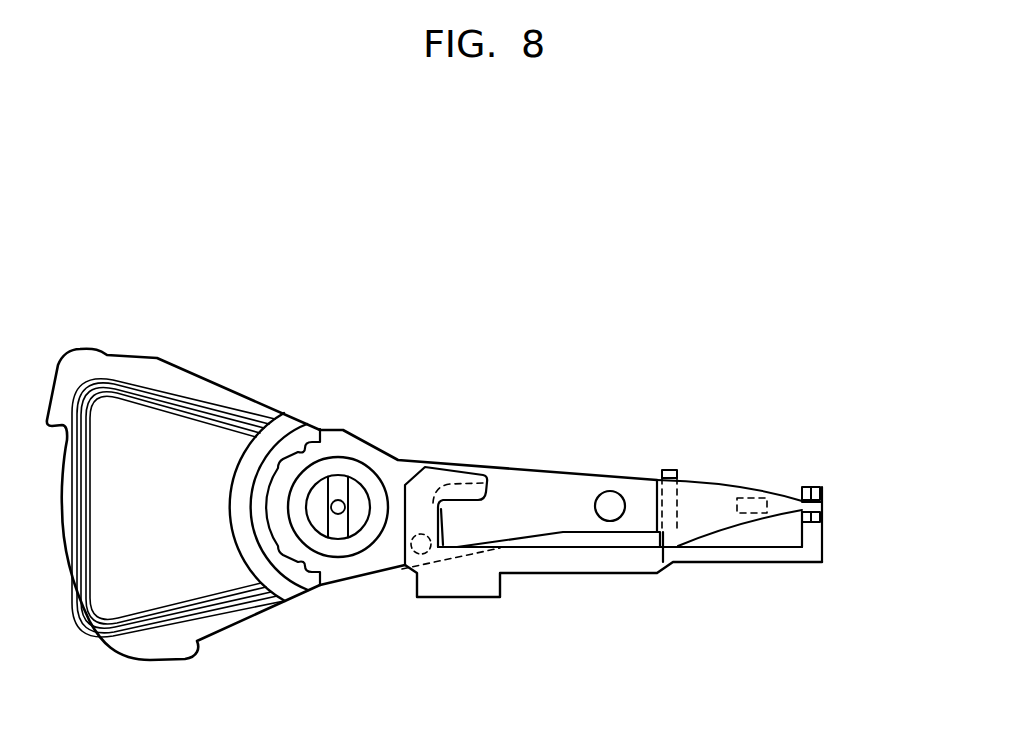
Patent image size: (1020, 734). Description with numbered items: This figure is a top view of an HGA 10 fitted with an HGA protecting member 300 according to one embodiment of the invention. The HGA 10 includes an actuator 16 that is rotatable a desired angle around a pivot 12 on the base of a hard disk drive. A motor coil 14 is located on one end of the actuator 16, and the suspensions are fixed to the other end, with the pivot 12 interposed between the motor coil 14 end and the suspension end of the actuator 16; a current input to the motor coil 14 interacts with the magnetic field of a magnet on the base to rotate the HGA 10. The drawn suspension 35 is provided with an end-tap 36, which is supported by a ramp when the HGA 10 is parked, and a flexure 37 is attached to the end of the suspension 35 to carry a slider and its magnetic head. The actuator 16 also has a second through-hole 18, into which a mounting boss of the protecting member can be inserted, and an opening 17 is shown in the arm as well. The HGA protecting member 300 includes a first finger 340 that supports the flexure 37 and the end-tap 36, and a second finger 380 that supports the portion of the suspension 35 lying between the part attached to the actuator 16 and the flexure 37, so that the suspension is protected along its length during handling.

The HGA 10 is at (267, 388).
The pivot 12 is at (340, 505).
The motor coil 14 is at (163, 398).
The actuator 16 is at (503, 468).
The hole 17 is at (612, 500).
The second through-hole 18 is at (418, 553).
The suspension 35 is at (691, 497).
The end-tap 36 is at (818, 497).
The flexure 37 is at (770, 507).
The HGA protecting member 300 is at (544, 602).
The first finger 340 is at (810, 537).
The second finger 380 is at (668, 543).